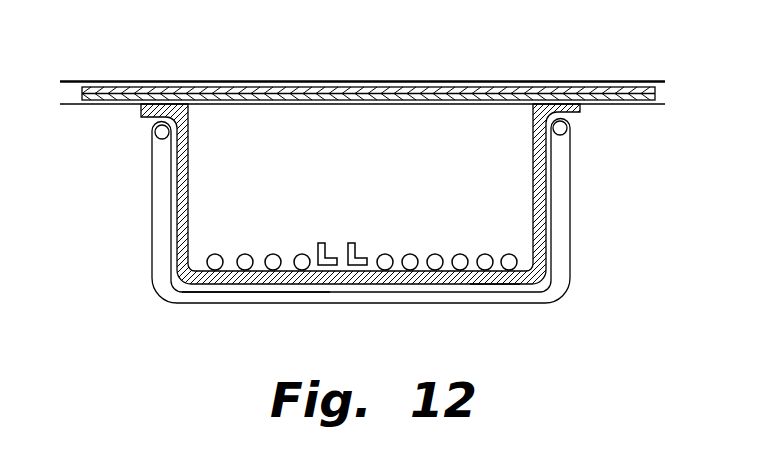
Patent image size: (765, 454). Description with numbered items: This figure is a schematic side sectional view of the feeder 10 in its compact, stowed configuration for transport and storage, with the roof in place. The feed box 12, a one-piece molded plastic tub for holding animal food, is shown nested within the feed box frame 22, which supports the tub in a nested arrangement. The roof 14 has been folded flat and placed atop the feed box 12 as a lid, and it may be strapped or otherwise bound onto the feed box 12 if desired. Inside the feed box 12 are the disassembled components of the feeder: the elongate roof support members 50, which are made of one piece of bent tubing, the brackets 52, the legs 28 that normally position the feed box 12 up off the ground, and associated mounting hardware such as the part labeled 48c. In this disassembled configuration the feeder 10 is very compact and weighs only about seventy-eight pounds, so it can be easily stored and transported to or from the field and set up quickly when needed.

The feeder 10 is at (132, 57).
The roof 14 is at (585, 62).
The feed box 12 is at (548, 193).
The feed box frame 22 is at (582, 212).
The elongate roof support members 50 is at (228, 293).
The brackets 52 is at (288, 293).
The ball element 48c is at (438, 266).
The legs 28 is at (490, 275).